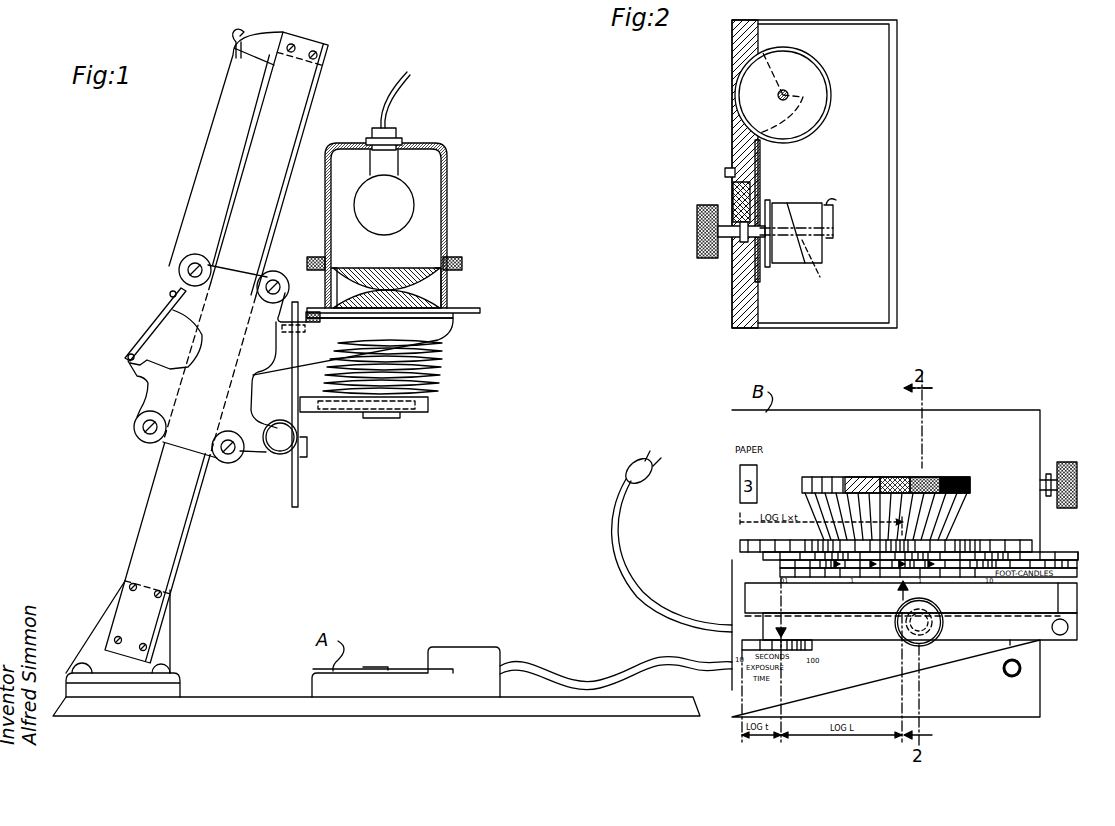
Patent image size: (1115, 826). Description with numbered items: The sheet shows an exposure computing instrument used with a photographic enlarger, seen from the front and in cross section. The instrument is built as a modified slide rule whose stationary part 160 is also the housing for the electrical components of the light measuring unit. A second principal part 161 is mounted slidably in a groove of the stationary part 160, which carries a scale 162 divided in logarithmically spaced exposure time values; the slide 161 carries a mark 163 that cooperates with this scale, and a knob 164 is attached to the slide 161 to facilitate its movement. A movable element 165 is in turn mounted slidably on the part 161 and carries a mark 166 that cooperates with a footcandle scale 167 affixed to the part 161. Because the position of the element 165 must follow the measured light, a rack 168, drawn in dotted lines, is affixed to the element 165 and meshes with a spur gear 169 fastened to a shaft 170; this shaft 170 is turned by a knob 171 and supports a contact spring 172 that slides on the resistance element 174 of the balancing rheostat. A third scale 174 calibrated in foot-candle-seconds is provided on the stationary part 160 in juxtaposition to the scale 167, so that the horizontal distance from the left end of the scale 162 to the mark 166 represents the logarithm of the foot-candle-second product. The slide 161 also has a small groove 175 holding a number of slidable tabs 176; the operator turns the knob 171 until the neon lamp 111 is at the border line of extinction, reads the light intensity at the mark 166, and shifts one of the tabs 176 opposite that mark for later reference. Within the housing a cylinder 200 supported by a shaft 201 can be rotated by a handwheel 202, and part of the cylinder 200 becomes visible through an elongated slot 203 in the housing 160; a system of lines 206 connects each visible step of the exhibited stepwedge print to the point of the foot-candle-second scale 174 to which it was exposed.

In FIG. 1, the neon lamp 111 is at (1020, 667).
In FIG. 1, the stationary part 160 is at (1038, 700).
In FIG. 2, the stationary part 160 is at (732, 306).
In FIG. 1, the slide 161 is at (1000, 636).
In FIG. 2, the slide 161 is at (730, 243).
In FIG. 1, the exposure time scale 162 is at (731, 641).
In FIG. 1, the mark 163 is at (783, 632).
In FIG. 1, the knob 164 is at (1068, 626).
In FIG. 1, the movable element 165 is at (748, 593).
In FIG. 2, the movable element 165 is at (733, 200).
In FIG. 1, the mark 166 is at (900, 588).
In FIG. 1, the footcandle scale 167 is at (763, 556).
In FIG. 1, the rack 168 is at (920, 626).
In FIG. 1, the spur gear 169 is at (933, 622).
In FIG. 2, the spur gear 169 is at (757, 287).
In FIG. 2, the shaft 170 is at (813, 275).
In FIG. 1, the knob 171 is at (925, 644).
In FIG. 2, the knob 171 is at (695, 211).
In FIG. 2, the contact spring 172 is at (834, 212).
In FIG. 1, the foot-candle-second scale 174 is at (760, 545).
In FIG. 2, the foot-candle-second scale 174 is at (805, 202).
In FIG. 1, the groove 175 is at (1079, 557).
In FIG. 1, the slidable tabs 176 is at (832, 568).
In FIG. 2, the slidable tabs 176 is at (725, 173).
In FIG. 2, the cylinder 200 is at (808, 60).
In FIG. 2, the shaft 201 is at (795, 93).
In FIG. 1, the handwheel 202 is at (1068, 462).
In FIG. 1, the elongated slot 203 is at (862, 477).
In FIG. 2, the elongated slot 203 is at (736, 90).
In FIG. 1, the system of lines 206 is at (813, 502).